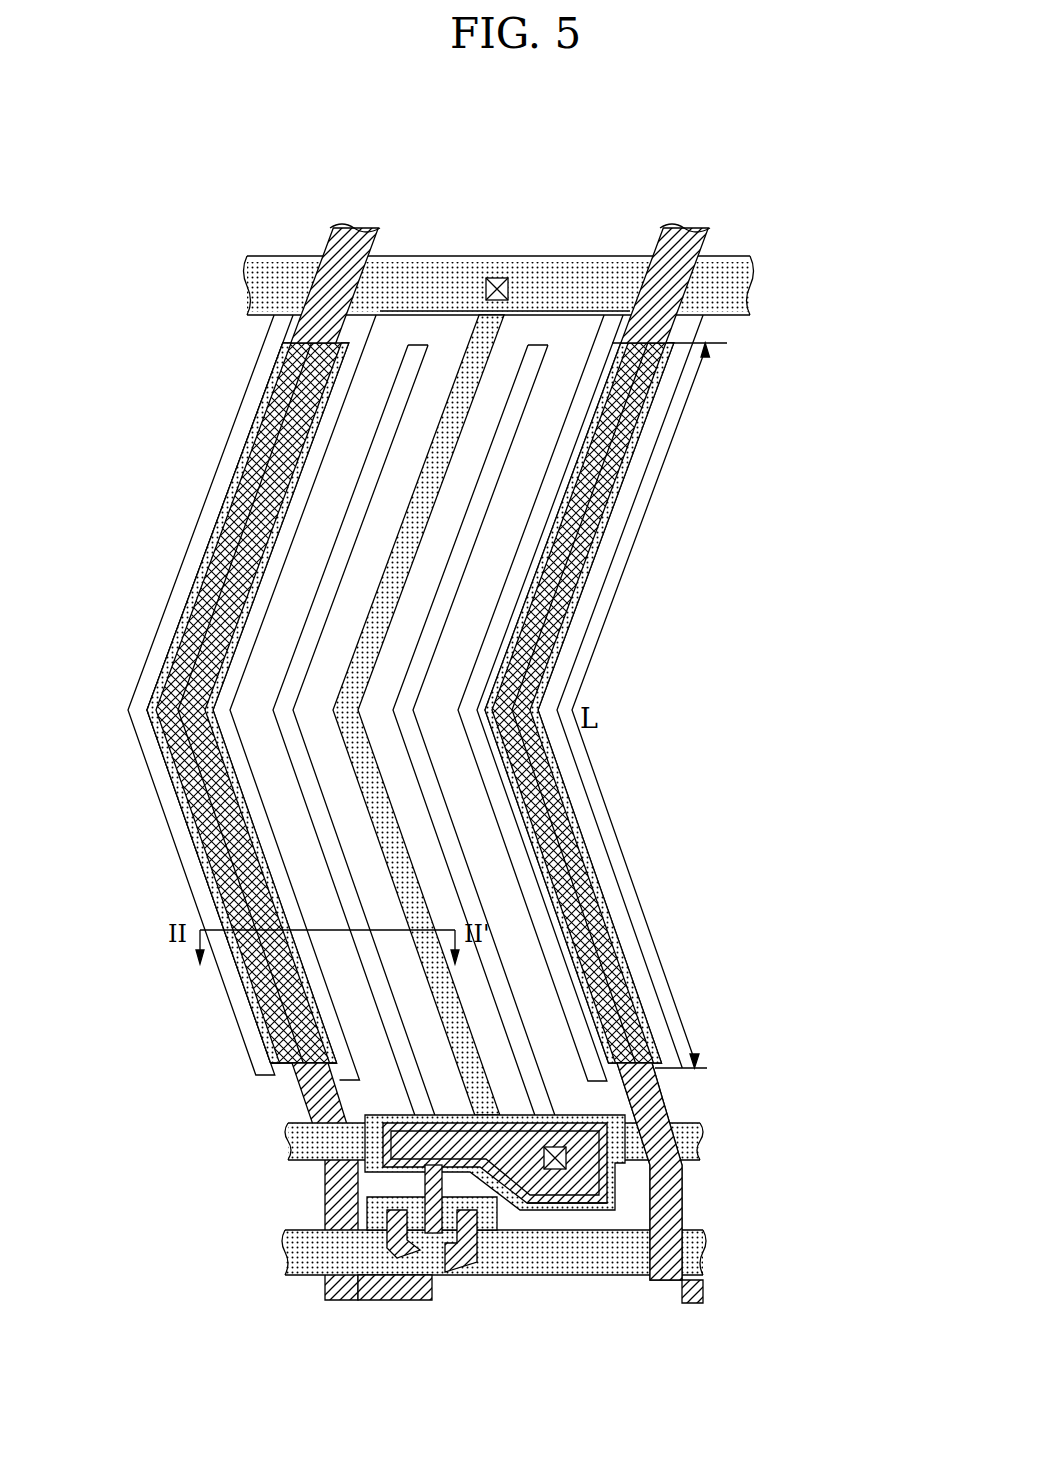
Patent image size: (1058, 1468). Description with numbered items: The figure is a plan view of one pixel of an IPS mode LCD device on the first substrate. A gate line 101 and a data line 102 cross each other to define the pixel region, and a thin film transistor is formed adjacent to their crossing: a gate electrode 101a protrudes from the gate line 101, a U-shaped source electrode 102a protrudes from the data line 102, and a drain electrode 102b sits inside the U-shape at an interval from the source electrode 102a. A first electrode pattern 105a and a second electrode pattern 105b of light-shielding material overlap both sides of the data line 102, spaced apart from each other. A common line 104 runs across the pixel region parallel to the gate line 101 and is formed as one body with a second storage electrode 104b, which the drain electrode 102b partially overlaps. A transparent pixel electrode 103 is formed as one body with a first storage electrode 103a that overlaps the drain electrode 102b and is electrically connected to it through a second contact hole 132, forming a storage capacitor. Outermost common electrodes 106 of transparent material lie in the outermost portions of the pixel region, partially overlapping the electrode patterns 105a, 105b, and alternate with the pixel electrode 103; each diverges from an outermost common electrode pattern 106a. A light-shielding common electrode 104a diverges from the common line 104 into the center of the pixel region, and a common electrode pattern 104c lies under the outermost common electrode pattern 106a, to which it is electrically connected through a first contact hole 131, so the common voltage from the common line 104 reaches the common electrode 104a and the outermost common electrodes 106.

The gate line 101 is at (628, 1270).
The gate electrode 101a is at (493, 1232).
The data line 102 is at (305, 1097).
The source electrode 102a is at (433, 1280).
The drain electrode 102b is at (595, 1205).
The pixel electrode 103 is at (428, 343).
The first storage electrode 103a is at (563, 1205).
The common line 104 is at (693, 1123).
The common electrode 104a is at (412, 850).
The second storage electrode 104b is at (660, 1076).
The common electrode pattern 104c is at (436, 257).
The first electrode pattern 105a is at (300, 345).
The second electrode pattern 105b is at (290, 1066).
The outermost common electrode 106 is at (560, 455).
The outermost common electrode pattern 106a is at (712, 240).
The first contact hole 131 is at (540, 343).
The second contact hole 132 is at (560, 1158).